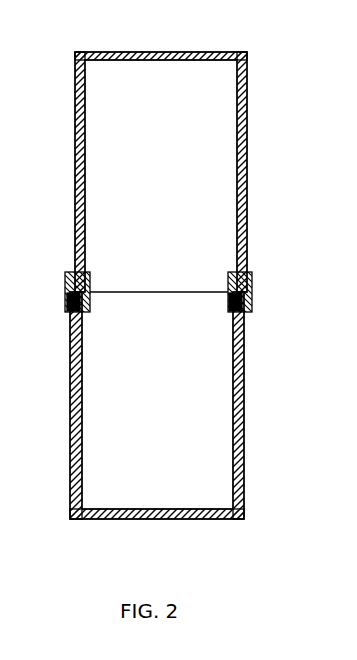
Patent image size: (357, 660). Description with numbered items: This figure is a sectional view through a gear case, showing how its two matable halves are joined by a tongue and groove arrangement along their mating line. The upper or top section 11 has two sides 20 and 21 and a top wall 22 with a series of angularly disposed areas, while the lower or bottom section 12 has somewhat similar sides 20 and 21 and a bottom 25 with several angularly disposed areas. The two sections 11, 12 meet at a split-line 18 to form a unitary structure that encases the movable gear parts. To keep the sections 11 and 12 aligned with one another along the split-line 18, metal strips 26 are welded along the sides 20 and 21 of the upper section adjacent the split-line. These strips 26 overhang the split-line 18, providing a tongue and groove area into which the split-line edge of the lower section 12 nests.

The upper section 11 is at (257, 99).
The lower section 12 is at (248, 486).
The split-line 18 is at (67, 306).
The side 20 is at (75, 131).
The side 21 is at (248, 152).
The top wall 22 is at (148, 53).
The bottom 25 is at (190, 519).
The metal strips 26 is at (68, 278).